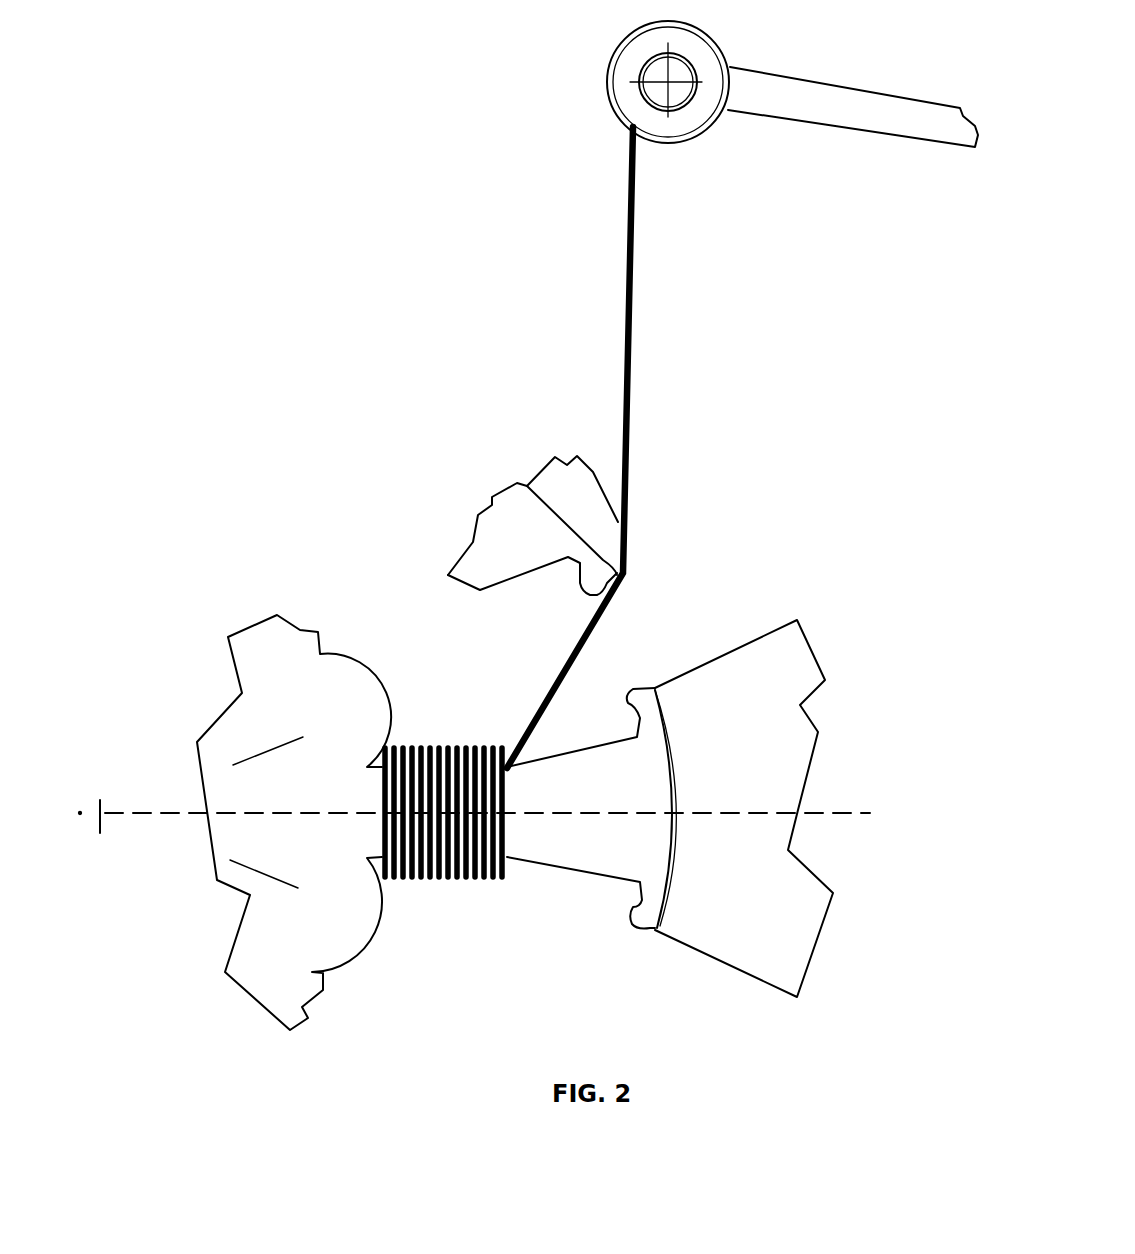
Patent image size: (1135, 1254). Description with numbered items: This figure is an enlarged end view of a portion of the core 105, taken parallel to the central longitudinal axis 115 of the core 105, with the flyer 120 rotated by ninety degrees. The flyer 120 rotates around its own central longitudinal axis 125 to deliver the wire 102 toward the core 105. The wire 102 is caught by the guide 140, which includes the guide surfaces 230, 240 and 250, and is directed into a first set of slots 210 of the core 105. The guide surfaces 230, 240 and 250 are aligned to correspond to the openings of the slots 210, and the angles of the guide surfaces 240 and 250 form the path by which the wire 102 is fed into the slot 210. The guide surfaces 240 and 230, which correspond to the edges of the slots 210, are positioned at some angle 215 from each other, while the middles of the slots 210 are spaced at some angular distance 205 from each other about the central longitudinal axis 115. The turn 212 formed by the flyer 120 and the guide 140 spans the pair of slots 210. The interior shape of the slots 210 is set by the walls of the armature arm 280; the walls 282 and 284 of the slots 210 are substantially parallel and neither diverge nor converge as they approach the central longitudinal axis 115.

The wire 102 is at (633, 250).
The core 105 is at (310, 630).
The central longitudinal axis 115 is at (98, 810).
The flyer 120 is at (850, 82).
The central longitudinal axis 125 is at (817, 810).
The guide 140 is at (838, 572).
The angular distance 205 is at (252, 863).
The first set of slots 210 is at (630, 657).
The turn 212 is at (437, 747).
The angle 215 is at (690, 938).
The guide surface 230 is at (707, 660).
The guide surface 240 is at (728, 968).
The guide surface 250 is at (634, 557).
The armature arm 280 is at (370, 825).
The wall 282 is at (367, 765).
The wall 284 is at (372, 858).